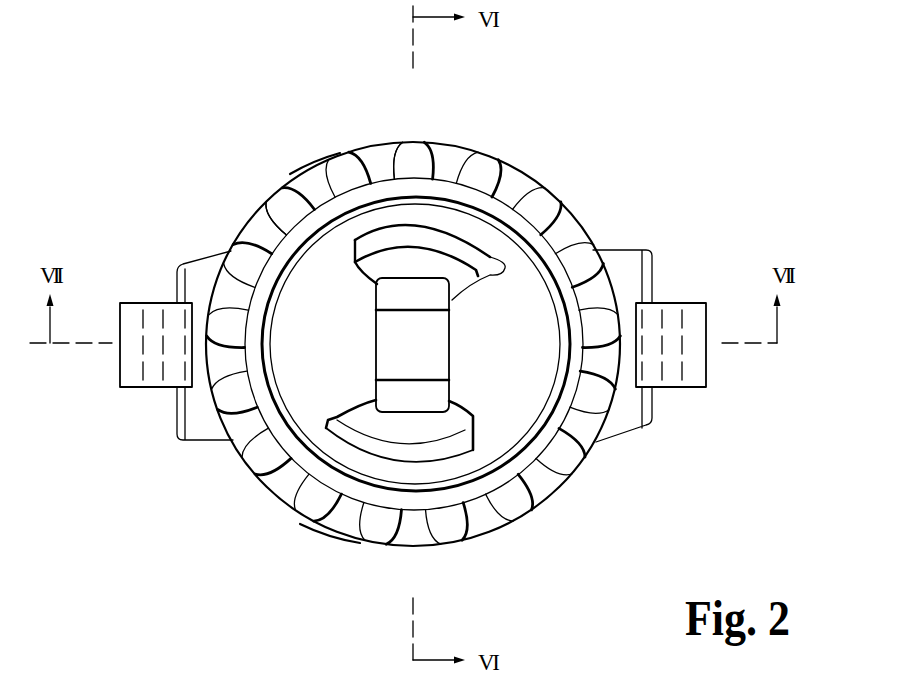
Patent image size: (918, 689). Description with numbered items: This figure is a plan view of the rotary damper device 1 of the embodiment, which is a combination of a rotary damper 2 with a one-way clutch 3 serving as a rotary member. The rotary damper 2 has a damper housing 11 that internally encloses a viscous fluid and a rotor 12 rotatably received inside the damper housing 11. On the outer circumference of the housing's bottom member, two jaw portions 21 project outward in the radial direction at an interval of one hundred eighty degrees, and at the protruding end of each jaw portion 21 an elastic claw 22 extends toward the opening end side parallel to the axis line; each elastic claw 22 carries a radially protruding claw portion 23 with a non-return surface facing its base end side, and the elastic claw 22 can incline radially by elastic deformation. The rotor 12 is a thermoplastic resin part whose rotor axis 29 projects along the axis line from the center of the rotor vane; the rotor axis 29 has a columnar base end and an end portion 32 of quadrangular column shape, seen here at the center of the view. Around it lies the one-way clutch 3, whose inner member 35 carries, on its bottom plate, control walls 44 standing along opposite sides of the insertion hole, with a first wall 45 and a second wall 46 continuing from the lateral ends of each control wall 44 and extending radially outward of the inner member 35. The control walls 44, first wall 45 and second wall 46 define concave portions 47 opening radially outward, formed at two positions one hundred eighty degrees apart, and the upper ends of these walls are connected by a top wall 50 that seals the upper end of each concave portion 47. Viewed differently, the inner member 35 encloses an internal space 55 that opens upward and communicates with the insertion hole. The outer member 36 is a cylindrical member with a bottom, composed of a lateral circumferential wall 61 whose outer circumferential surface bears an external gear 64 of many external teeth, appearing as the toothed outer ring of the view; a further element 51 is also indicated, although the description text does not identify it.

The rotary damper device 1 is at (600, 47).
The rotary damper 2 is at (263, 493).
The one-way clutch 3 is at (333, 541).
The damper housing 11 is at (549, 510).
The rotor 12 is at (435, 423).
The jaw portion 21 is at (203, 427).
The elastic claw 22 is at (141, 302).
The claw portion 23 is at (133, 365).
The rotor axis 29 is at (407, 420).
The end portion 32 is at (387, 362).
The inner member 35 is at (308, 165).
The outer member 36 is at (275, 245).
The control wall 44 is at (448, 337).
The first wall 45 is at (492, 285).
The second wall 46 is at (465, 398).
The concave portion 47 is at (462, 215).
The top wall 50 is at (533, 288).
The inner ring bore 51 is at (513, 428).
The internal space 55 is at (367, 417).
The lateral circumferential wall 61 is at (382, 193).
The external gear 64 is at (282, 205).